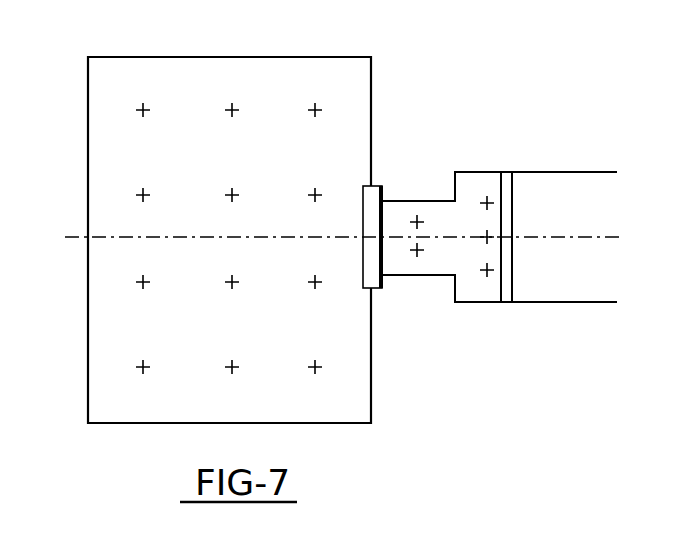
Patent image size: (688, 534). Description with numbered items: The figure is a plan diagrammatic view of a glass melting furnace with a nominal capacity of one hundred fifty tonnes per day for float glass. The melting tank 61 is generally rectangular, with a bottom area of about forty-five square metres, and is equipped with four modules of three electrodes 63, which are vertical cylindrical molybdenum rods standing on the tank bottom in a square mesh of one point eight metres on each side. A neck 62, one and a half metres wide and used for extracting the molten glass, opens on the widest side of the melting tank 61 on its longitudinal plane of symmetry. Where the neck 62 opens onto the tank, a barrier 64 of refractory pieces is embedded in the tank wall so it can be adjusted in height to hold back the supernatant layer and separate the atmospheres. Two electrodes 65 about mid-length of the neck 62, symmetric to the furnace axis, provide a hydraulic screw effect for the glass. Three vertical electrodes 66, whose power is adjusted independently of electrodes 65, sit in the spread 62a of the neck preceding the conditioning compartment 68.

The melting tank 61 is at (177, 48).
The neck 62 is at (413, 188).
The spread of neck 62a is at (489, 181).
The electrodes 63 is at (141, 112).
The barrier 64 is at (375, 289).
The electrodes 65 is at (422, 251).
The vertical electrodes 66 is at (487, 273).
The conditioning compartment 68 is at (593, 160).